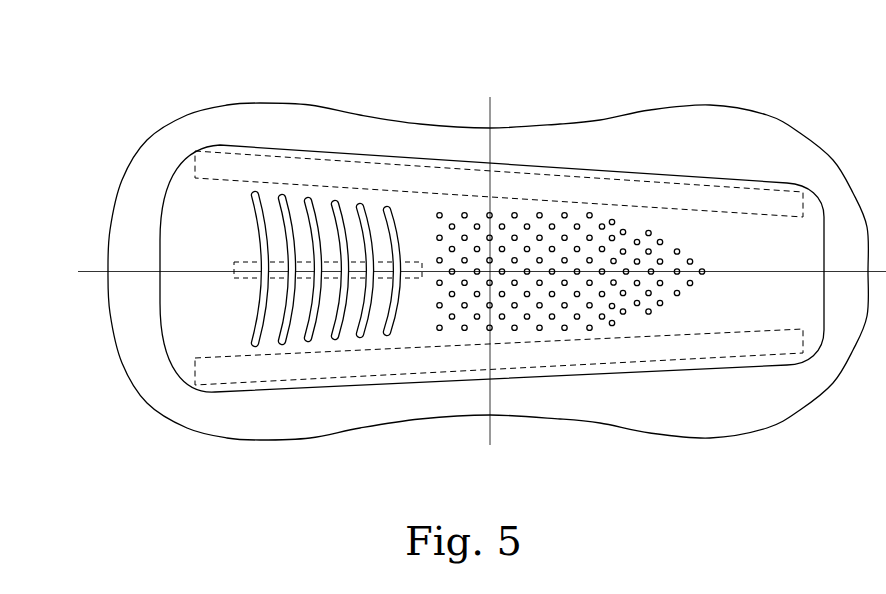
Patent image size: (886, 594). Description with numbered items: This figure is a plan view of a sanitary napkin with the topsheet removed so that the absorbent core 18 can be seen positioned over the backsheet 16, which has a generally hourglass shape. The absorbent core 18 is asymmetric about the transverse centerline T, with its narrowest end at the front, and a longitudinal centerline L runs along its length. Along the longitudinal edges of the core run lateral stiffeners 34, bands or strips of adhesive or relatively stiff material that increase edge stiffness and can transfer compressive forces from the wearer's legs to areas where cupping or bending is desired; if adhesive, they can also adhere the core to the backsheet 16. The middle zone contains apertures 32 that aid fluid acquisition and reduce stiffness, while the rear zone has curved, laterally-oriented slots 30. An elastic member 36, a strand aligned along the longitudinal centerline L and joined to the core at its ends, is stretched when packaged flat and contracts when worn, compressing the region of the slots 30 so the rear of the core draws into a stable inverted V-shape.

The backsheet 16 is at (735, 122).
The absorbent core 18 is at (772, 233).
The laterally-oriented slots 30 is at (360, 197).
The apertures 32 is at (625, 295).
The lateral stiffener 34 is at (652, 195).
The elastic member 36 is at (242, 273).
The longitudinal centerline L is at (95, 268).
The transverse centerline T is at (490, 108).